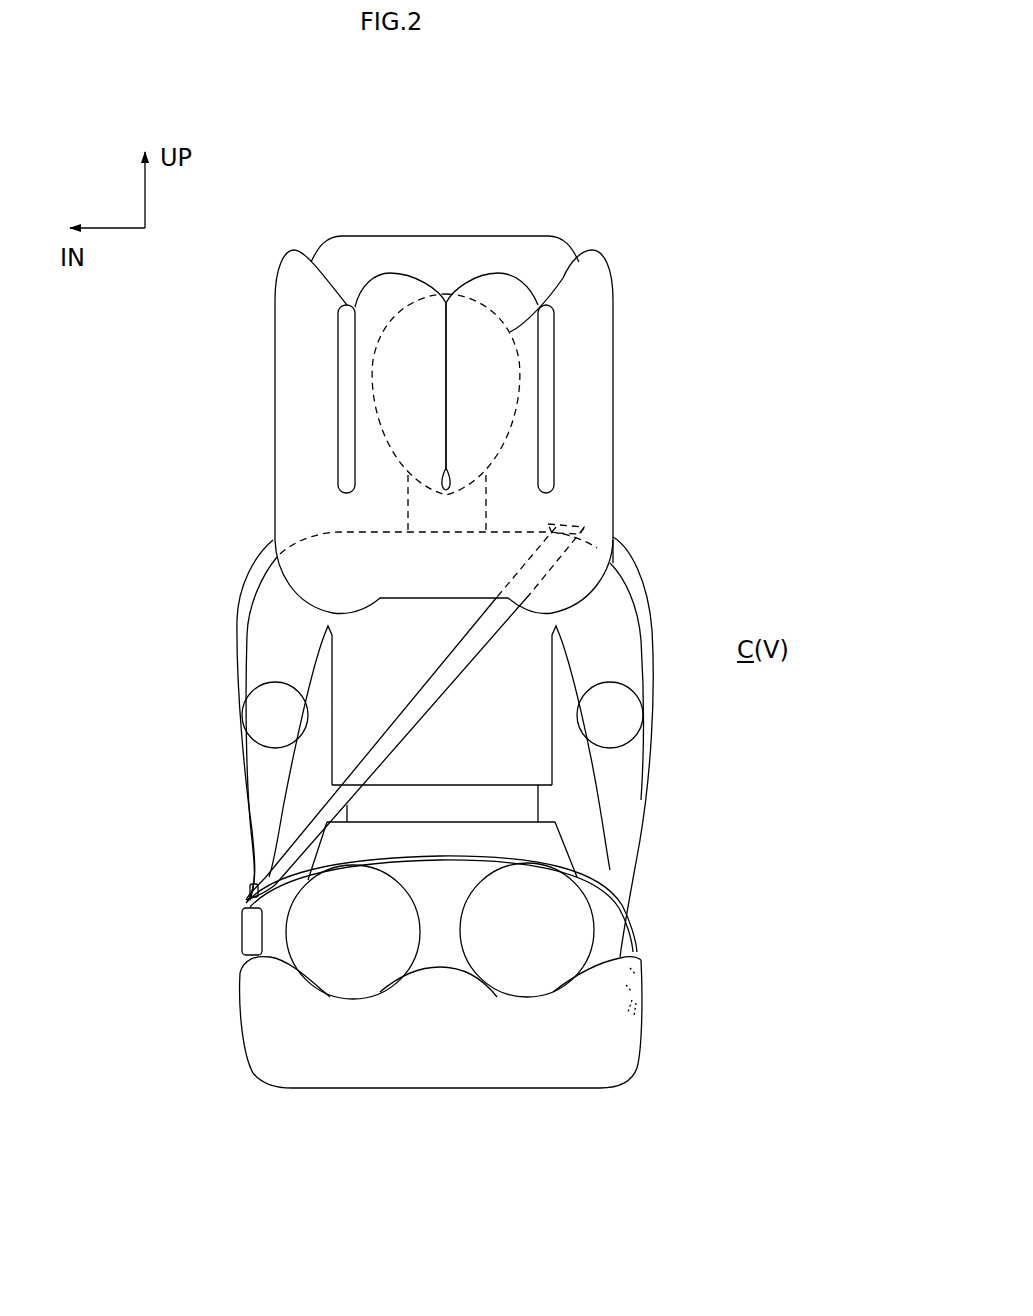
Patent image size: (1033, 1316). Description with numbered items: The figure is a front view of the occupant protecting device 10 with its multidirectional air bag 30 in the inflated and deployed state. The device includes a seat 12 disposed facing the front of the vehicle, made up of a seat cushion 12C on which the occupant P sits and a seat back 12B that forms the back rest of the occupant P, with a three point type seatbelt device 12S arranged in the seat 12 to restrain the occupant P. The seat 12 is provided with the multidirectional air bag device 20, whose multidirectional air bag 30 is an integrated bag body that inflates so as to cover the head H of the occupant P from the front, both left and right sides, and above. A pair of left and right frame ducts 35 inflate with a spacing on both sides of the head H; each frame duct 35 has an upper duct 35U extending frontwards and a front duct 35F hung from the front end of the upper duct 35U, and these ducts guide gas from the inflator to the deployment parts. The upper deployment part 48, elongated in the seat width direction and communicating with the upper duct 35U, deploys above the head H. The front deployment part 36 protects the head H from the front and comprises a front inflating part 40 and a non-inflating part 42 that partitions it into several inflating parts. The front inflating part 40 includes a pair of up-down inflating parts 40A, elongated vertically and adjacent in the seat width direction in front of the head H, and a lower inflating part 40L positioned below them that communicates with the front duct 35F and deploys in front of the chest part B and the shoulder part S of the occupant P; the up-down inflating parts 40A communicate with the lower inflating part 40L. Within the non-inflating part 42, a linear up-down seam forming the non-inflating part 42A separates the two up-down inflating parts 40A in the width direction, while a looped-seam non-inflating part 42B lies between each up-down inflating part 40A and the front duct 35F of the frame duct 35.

The occupant protecting device 10 is at (487, 762).
The seat 12 is at (390, 861).
The seat back 12B is at (237, 660).
The seat cushion 12C is at (553, 1072).
The seatbelt device 12S is at (273, 820).
The multidirectional air bag device 20 is at (451, 357).
The multidirectional air bag 30 is at (460, 357).
The frame duct 35 is at (444, 377).
The upper duct 35U is at (294, 263).
The front duct 35F is at (292, 348).
The front deployment part 36 is at (554, 402).
The front inflating part 40 is at (451, 308).
The up-down inflating part 40A is at (483, 287).
The lower inflating part 40L is at (333, 515).
The non-inflating part 42 is at (451, 398).
The non-inflating part 42A is at (446, 432).
The non-inflating part 42B is at (338, 422).
The upper deployment part 48 is at (467, 228).
The head H is at (513, 332).
The shoulder part S is at (317, 573).
The chest part B is at (435, 583).
The occupant P is at (412, 416).